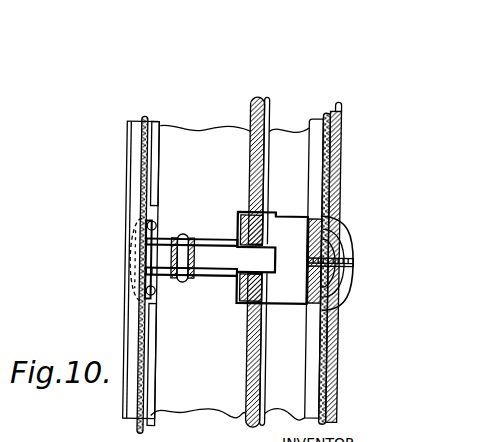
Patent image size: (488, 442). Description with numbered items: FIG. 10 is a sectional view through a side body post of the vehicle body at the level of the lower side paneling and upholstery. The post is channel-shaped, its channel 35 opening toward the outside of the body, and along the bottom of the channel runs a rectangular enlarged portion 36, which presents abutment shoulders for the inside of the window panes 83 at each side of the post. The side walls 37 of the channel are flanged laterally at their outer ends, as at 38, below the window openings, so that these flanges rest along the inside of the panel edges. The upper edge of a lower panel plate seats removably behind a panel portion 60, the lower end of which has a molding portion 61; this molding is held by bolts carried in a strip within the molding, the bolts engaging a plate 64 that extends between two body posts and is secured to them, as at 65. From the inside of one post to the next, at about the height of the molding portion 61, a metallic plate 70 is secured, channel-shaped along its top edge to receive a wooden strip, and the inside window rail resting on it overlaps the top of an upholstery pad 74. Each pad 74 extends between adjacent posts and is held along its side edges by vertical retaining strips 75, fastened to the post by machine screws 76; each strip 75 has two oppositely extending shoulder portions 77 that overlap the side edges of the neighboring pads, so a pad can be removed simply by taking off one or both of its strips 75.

The channel 35 is at (220, 269).
The rectangular enlarged portion 36 is at (293, 215).
The side walls 37 is at (203, 240).
The flanges 38 is at (146, 234).
The panel portion 60 is at (140, 174).
The molding portion 61 is at (130, 201).
The plate 64 is at (151, 156).
The securing points of plate to posts 65 is at (181, 235).
The metallic plate 70 is at (313, 334).
The upholstery pad 74 is at (340, 150).
The vertical retaining strips 75 is at (346, 240).
The machine screws 76 is at (354, 265).
The shoulder portions 77 is at (347, 221).
The window panes 83 is at (258, 115).